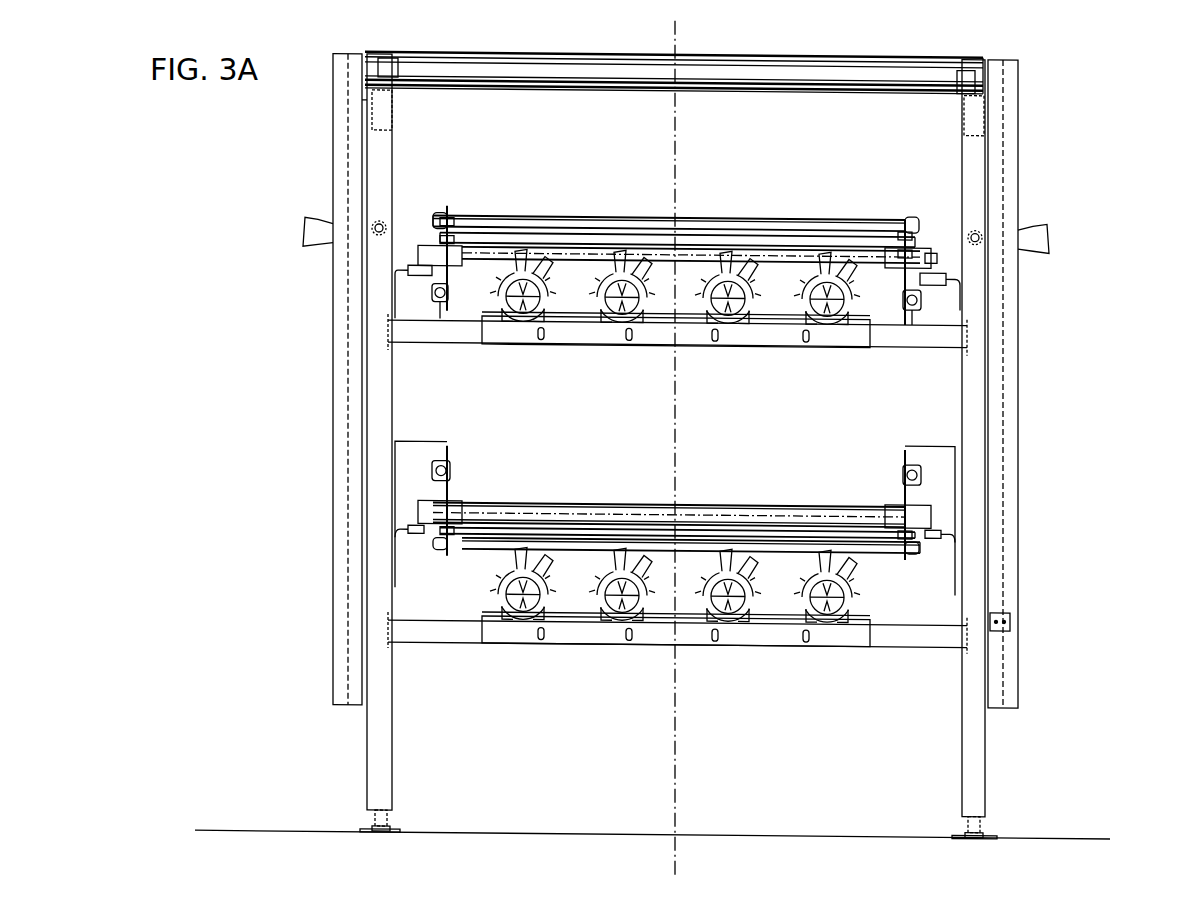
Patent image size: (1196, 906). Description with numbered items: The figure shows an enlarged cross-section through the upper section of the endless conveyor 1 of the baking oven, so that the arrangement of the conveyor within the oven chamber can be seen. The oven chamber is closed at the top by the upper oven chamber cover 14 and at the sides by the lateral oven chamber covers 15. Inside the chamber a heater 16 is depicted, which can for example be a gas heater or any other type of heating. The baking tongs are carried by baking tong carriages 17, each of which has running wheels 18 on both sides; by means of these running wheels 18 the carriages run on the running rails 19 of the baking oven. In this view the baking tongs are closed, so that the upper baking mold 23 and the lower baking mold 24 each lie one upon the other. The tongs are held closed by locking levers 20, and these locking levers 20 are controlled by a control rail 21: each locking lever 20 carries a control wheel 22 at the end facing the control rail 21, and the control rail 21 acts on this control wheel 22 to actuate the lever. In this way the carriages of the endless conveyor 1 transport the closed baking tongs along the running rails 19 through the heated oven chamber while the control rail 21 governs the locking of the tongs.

The endless conveyor 1 is at (706, 323).
The upper oven chamber cover 14 is at (783, 75).
The lateral oven chamber cover 15 is at (345, 340).
The heater 16 is at (762, 343).
The baking tong carriage 17 is at (930, 225).
The running wheels 18 is at (935, 240).
The running rail 19 is at (946, 272).
The locking lever 20 is at (440, 293).
The control rail 21 is at (918, 310).
The control wheel 22 is at (435, 295).
The upper baking mold 23 is at (623, 226).
The lower baking mold 24 is at (717, 240).